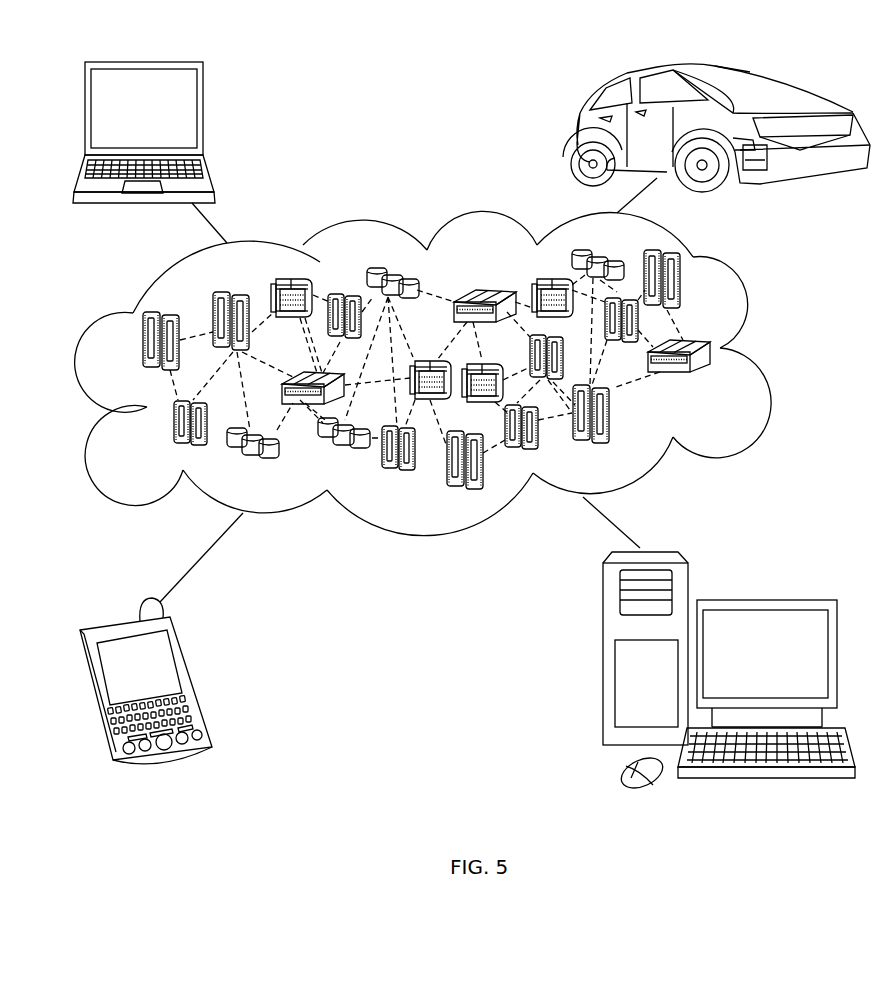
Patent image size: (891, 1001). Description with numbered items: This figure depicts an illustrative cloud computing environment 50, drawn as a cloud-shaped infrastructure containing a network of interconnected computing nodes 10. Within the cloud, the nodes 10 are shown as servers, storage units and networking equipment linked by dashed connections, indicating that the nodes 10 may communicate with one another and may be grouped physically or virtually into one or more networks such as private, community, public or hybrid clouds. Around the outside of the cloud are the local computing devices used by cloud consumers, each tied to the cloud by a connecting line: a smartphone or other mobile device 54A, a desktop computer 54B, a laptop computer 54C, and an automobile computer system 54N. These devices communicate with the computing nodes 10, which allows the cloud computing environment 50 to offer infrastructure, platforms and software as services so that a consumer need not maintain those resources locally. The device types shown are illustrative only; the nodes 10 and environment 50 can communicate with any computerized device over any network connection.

The computing node 10 is at (713, 378).
The cloud computing environment 50 is at (762, 353).
The smartphone or other mobile device 54A is at (193, 677).
The desktop computer 54B is at (764, 600).
The laptop computer 54C is at (202, 117).
The automobile computer system 54N is at (577, 132).